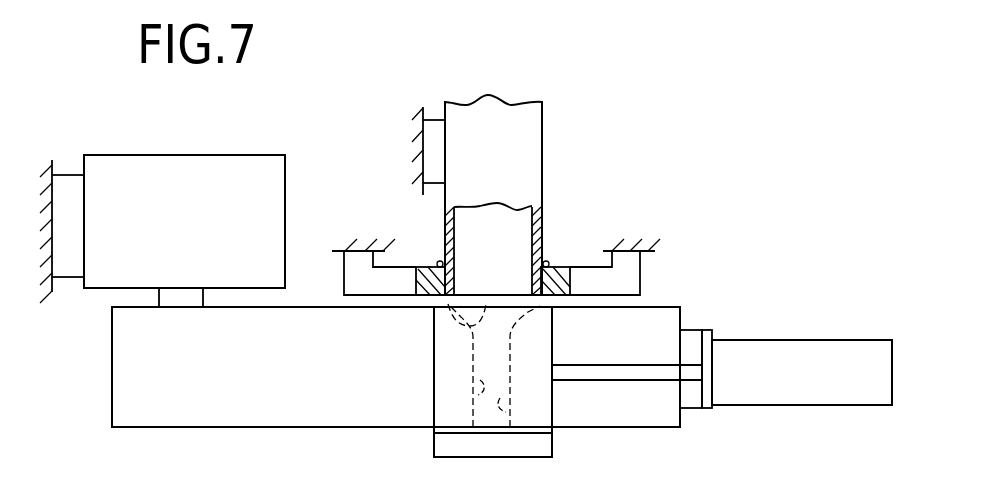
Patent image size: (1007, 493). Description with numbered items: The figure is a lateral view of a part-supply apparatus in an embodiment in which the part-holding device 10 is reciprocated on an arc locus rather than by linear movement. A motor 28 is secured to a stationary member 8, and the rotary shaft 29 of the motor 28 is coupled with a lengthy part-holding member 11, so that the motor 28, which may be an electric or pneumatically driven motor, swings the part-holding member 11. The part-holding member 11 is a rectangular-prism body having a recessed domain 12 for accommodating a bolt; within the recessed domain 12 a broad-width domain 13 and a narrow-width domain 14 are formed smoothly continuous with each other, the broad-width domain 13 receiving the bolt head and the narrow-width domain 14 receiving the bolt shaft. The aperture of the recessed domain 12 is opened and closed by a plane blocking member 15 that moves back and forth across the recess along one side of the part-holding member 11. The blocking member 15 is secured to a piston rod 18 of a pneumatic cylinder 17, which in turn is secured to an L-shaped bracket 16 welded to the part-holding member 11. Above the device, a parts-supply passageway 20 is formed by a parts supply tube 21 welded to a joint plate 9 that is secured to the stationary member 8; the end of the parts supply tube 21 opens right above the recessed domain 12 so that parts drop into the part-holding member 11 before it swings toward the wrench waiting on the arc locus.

The stationary member 8 is at (53, 262).
The joint plate 9 is at (578, 267).
The part-holding device 10 is at (333, 428).
The part-holding member 11 is at (238, 428).
The recessed domain 12 is at (473, 380).
The broad-width domain 13 is at (483, 297).
The narrow-width domain 14 is at (500, 398).
The blocking member 15 is at (434, 335).
The L-shaped bracket 16 is at (717, 362).
The pneumatic cylinder 17 is at (833, 340).
The piston rod 18 is at (640, 360).
The parts-supply passageway 20 is at (506, 243).
The parts supply tube 21 is at (542, 130).
The motor 28 is at (285, 185).
The rotary shaft 29 is at (207, 293).